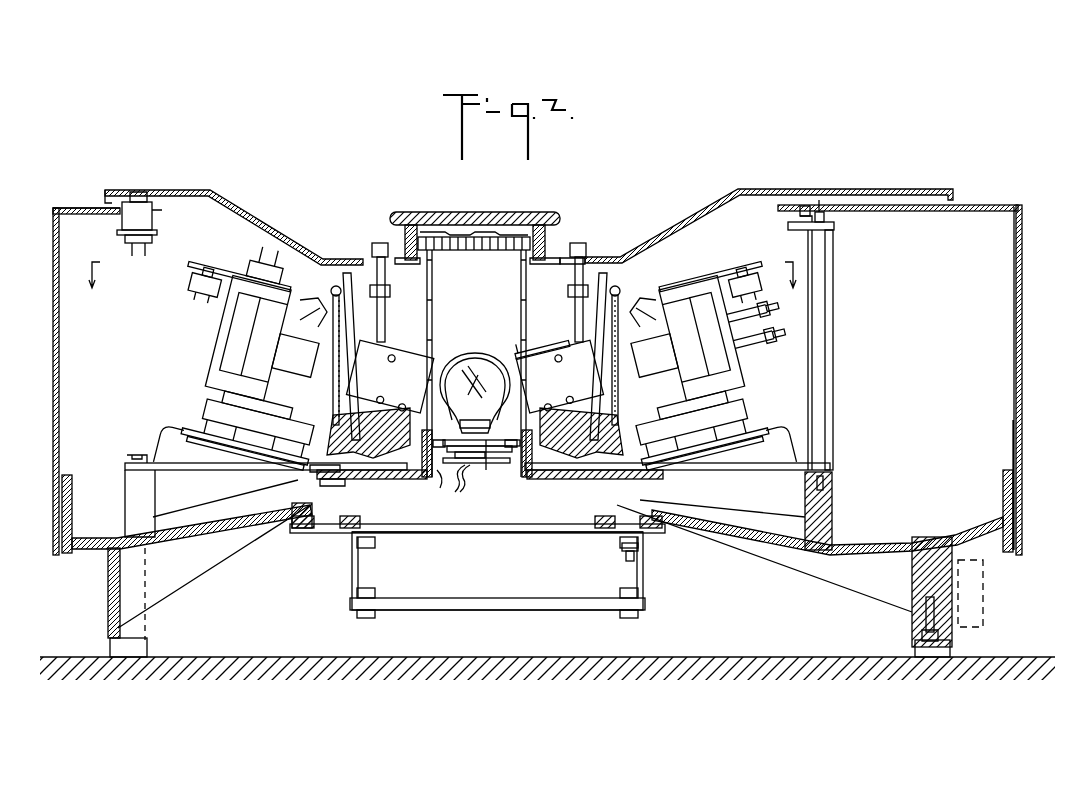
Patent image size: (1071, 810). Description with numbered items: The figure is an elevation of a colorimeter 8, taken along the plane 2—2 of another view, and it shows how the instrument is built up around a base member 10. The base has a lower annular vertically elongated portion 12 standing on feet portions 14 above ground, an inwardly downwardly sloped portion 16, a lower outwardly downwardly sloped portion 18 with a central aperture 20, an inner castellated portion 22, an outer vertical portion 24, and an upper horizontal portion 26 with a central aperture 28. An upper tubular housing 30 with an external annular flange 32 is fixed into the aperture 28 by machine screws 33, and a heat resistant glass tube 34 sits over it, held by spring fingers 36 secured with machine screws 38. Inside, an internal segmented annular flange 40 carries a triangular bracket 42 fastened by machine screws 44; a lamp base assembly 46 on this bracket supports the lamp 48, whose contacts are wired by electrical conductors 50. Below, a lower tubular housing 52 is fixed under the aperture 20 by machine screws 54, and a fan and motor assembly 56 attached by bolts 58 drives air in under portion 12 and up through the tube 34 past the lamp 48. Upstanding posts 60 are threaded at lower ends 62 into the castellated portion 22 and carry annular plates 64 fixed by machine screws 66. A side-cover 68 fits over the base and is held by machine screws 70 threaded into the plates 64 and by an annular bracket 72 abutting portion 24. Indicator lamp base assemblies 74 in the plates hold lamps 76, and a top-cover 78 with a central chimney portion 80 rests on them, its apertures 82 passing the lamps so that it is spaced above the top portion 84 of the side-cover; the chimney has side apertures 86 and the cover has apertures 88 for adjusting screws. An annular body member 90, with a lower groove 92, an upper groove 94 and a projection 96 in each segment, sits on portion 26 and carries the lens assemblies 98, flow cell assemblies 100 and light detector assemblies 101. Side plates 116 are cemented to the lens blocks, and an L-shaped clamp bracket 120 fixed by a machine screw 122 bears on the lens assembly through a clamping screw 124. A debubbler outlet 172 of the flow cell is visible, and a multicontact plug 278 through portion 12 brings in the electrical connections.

The colorimeter 8 is at (952, 138).
The section plane 2 is at (443, 286).
The base member 10 is at (373, 473).
The lower annular vertically elongated portion 12 is at (108, 590).
The feet portions 14 is at (150, 634).
The inwardly downwardly sloped portion 16 is at (882, 537).
The lower outwardly downwardly sloped portion 18 is at (712, 530).
The central aperture 20 is at (633, 515).
The inner annular castellated portion 22 is at (125, 500).
The outer annular vertically elongated portion 24 is at (72, 483).
The upper horizontal portion 26 is at (577, 475).
The central aperture 28 is at (498, 463).
The upper tubular housing 30 is at (437, 478).
The external annular flange 32 is at (420, 478).
The machine screws 33 is at (533, 480).
The tube 34 is at (432, 277).
The spring fingers 36 is at (434, 440).
The machine screws 38 is at (482, 398).
The internal segmented annular flange 40 is at (492, 455).
The bracket 42 is at (484, 440).
The machine screws 44 is at (512, 440).
The lamp base assembly 46 is at (487, 470).
The lamp 48 is at (478, 355).
The electrical conductors 50 is at (468, 478).
The lower tubular housing 52 is at (320, 528).
The machine screws 54 is at (300, 528).
The fan and motor assembly 56 is at (458, 582).
The bolts 58 is at (636, 555).
The upstanding posts 60 is at (834, 396).
The lower ends 62 is at (828, 470).
The annular plates 64 is at (844, 232).
The machine screws 66 is at (832, 212).
The side-cover 68 is at (1022, 287).
The machine screws 70 is at (803, 204).
The annular bracket 72 is at (1013, 438).
The indicator lamp base assemblies 74 is at (168, 226).
The lamps 76 is at (138, 195).
The top-cover 78 is at (678, 222).
The chimney portion 80 is at (495, 212).
The apertures 82 is at (150, 195).
The top portion 84 is at (985, 205).
The side apertures 86 is at (553, 230).
The apertures 88 is at (580, 258).
The annular body member 90 is at (330, 470).
The lower groove 92 is at (325, 486).
The upper groove 94 is at (388, 370).
The projection 96 is at (368, 370).
The lens assemblies 98 is at (390, 338).
The flow cell assemblies 100 is at (320, 292).
The light detector assemblies 101 is at (262, 250).
The side plates 116 is at (398, 318).
The L-shaped clamp bracket 120 is at (587, 300).
The machine screw 122 is at (605, 398).
The clamping screw 124 is at (556, 320).
The debubbler outlet 172 is at (657, 318).
The multicontact plug 278 is at (985, 600).